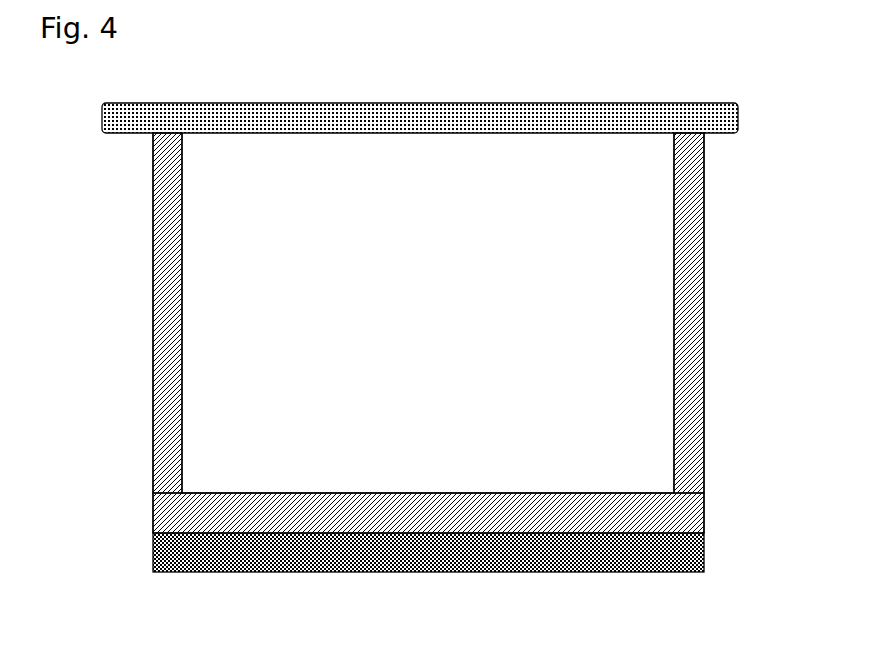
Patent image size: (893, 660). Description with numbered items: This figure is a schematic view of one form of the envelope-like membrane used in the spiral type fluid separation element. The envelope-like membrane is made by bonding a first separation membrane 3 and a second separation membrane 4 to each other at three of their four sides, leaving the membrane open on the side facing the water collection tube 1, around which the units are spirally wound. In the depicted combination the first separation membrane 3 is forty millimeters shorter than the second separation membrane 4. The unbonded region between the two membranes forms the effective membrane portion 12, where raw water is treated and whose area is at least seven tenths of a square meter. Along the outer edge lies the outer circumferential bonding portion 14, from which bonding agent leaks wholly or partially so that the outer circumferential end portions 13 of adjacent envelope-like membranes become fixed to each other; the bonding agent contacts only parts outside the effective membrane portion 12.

The water collection tube 1 is at (736, 133).
The first separation membrane 3 is at (153, 163).
The effective membrane portion 12 is at (406, 334).
The outer circumferential end portion 13 is at (595, 556).
The outer circumferential bonding portion 14 is at (636, 535).
The second separation membrane 4 is at (388, 583).